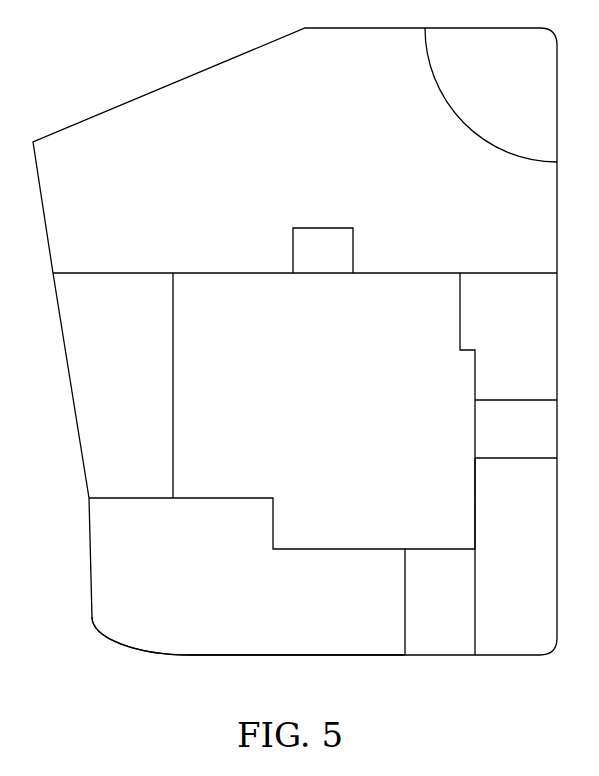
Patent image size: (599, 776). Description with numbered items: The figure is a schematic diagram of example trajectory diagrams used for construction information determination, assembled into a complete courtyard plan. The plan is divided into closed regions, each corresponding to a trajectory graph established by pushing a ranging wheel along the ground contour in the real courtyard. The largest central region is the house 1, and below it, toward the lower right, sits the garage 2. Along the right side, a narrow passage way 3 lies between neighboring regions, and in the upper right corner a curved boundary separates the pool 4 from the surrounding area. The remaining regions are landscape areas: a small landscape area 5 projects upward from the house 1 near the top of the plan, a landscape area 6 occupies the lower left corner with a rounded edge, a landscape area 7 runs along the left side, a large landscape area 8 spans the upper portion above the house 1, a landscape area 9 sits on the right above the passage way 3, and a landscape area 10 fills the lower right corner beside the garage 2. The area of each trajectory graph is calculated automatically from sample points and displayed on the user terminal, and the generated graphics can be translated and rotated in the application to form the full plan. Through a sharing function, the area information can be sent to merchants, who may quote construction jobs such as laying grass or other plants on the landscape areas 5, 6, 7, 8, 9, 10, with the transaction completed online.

The house 1 is at (324, 411).
The garage 2 is at (430, 602).
The passage way 3 is at (516, 436).
The pool 4 is at (491, 95).
The landscape area 5 is at (323, 250).
The landscape area 6 is at (248, 618).
The landscape area 7 is at (131, 385).
The landscape area 8 is at (305, 214).
The landscape area 9 is at (516, 358).
The landscape area 10 is at (505, 556).